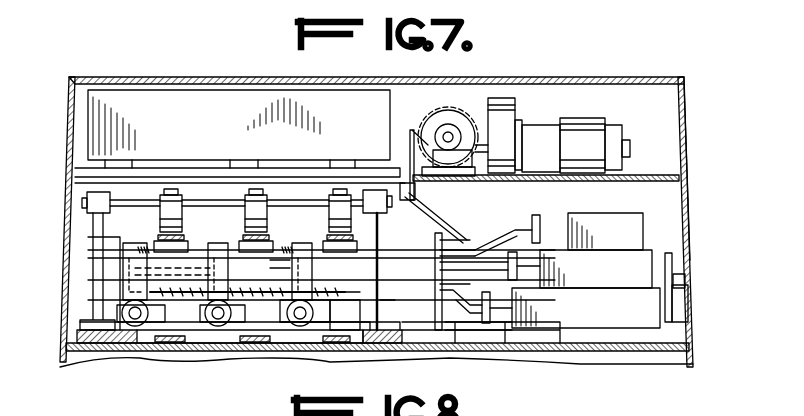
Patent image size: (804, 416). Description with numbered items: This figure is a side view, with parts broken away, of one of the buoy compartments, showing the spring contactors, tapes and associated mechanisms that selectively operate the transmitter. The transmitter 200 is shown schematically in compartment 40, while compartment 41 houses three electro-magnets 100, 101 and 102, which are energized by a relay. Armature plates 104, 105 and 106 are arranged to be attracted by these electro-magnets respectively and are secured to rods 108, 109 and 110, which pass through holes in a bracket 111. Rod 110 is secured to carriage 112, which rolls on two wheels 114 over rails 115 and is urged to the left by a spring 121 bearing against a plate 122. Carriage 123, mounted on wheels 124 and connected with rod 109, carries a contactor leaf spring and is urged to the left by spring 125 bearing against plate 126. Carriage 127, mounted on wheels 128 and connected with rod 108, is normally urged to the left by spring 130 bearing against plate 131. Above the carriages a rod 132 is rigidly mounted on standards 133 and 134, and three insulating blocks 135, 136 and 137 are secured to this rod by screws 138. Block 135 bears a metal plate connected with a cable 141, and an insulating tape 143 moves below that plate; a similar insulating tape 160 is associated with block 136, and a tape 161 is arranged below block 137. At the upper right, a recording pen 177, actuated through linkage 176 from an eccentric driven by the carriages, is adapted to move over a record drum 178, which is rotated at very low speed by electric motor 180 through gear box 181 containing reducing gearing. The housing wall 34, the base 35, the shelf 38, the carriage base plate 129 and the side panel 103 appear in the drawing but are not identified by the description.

The housing top wall 34 is at (238, 84).
The housing bottom / base plate 35 is at (545, 345).
The shelf 38 is at (662, 167).
The compartment 40 is at (672, 130).
The compartment 41 is at (690, 198).
The transmitter 200 is at (240, 136).
The standard 133 is at (87, 230).
The carriage 127 is at (90, 268).
The insulating block 137 is at (172, 189).
The insulating block 136 is at (256, 189).
The insulating block 135 is at (340, 189).
The screws 138 is at (370, 190).
The insulating tape 143 is at (380, 226).
The standard 134 is at (435, 238).
The carriage base plate 129 is at (316, 296).
The tape 161 is at (146, 243).
The rod 132 is at (205, 243).
The insulating tape 160 is at (226, 245).
The spring 130 is at (138, 300).
The carriage 123 is at (220, 300).
The carriage 112 is at (300, 262).
The cable 141 is at (278, 250).
The wheels 128 is at (130, 322).
The plate 131 is at (140, 325).
The spring 125 is at (226, 323).
The wheels 124 is at (208, 325).
The plate 126 is at (452, 235).
The rails 115 is at (335, 320).
The spring 121 is at (352, 330).
The wheels 114 is at (335, 343).
The plate 122 is at (380, 303).
The bracket 111 is at (438, 330).
The recording pen 177 is at (433, 120).
The record drum 178 is at (448, 124).
The gear box 181 is at (502, 98).
The electric motor 180 is at (585, 125).
The electro-magnet 100 is at (605, 231).
The electro-magnet 101 is at (596, 269).
The electro-magnet 102 is at (586, 308).
The armature plate 104 is at (538, 215).
The rod 108 is at (480, 248).
The linkage 176 is at (458, 236).
The armature plate 105 is at (517, 266).
The rod 109 is at (470, 274).
The armature plate 106 is at (506, 306).
The rod 110 is at (470, 338).
The side panel 103 is at (676, 287).